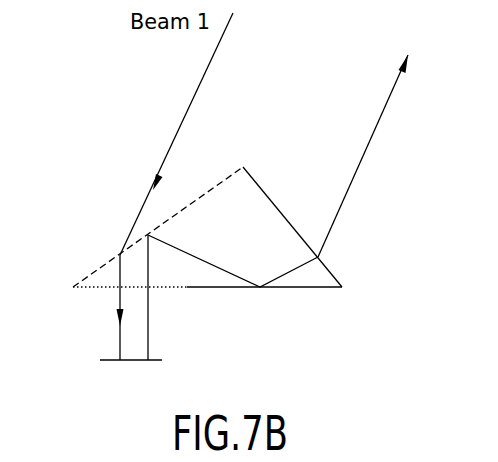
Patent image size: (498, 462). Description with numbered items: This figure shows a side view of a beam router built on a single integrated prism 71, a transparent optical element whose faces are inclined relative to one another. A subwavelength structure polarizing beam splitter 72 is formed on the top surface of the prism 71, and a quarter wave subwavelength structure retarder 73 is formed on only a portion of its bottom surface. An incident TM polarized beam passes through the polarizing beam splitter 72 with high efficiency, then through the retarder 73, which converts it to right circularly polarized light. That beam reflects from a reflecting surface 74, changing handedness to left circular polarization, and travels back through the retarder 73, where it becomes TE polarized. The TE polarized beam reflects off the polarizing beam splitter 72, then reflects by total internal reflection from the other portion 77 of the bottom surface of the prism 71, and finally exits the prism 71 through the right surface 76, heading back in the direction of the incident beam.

The prism 71 is at (257, 205).
The subwavelength structure polarizing beam splitter 72 is at (98, 252).
The subwavelength structure retarder 73 is at (93, 295).
The reflecting surface 74 is at (103, 362).
The right surface 76 is at (327, 258).
The other portion of the bottom surface 77 is at (225, 302).